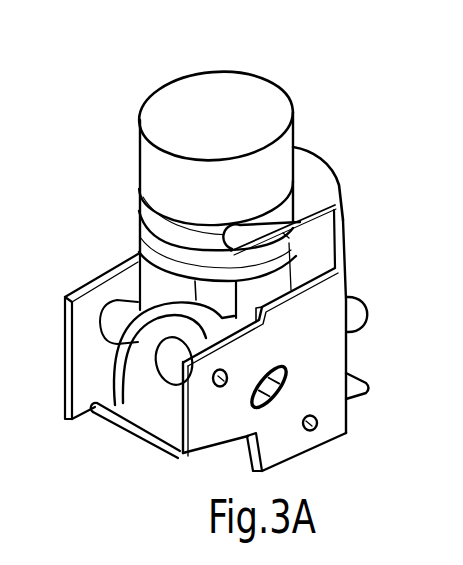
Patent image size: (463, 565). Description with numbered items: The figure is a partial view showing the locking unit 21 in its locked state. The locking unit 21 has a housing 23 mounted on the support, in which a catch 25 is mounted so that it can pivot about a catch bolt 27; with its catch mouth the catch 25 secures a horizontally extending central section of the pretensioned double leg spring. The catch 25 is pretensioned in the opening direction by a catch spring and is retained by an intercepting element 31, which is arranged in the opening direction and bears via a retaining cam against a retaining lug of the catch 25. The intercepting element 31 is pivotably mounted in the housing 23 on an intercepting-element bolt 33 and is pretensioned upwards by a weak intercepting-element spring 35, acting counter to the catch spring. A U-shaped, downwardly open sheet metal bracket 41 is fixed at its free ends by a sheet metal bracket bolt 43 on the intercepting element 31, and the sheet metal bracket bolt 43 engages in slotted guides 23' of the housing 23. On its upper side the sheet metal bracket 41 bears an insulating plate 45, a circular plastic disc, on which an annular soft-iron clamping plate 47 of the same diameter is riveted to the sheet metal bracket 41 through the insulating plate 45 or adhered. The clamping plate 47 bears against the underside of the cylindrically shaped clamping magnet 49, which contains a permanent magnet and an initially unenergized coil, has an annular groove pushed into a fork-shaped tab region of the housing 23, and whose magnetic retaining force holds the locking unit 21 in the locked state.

The locking unit 21 is at (320, 135).
The clamping magnet 49 is at (157, 167).
The clamping plate 47 is at (137, 240).
The insulating plate 45 is at (137, 252).
The sheet metal bracket 41 is at (270, 280).
The housing 23 is at (302, 334).
The slotted guides 23' is at (322, 466).
The catch 25 is at (352, 315).
The sheet metal bracket bolt 43 is at (285, 366).
The catch bolt 27 is at (318, 426).
The intercepting-element bolt 33 is at (220, 387).
The intercepting-element spring 35 is at (118, 364).
The intercepting element 31 is at (205, 318).